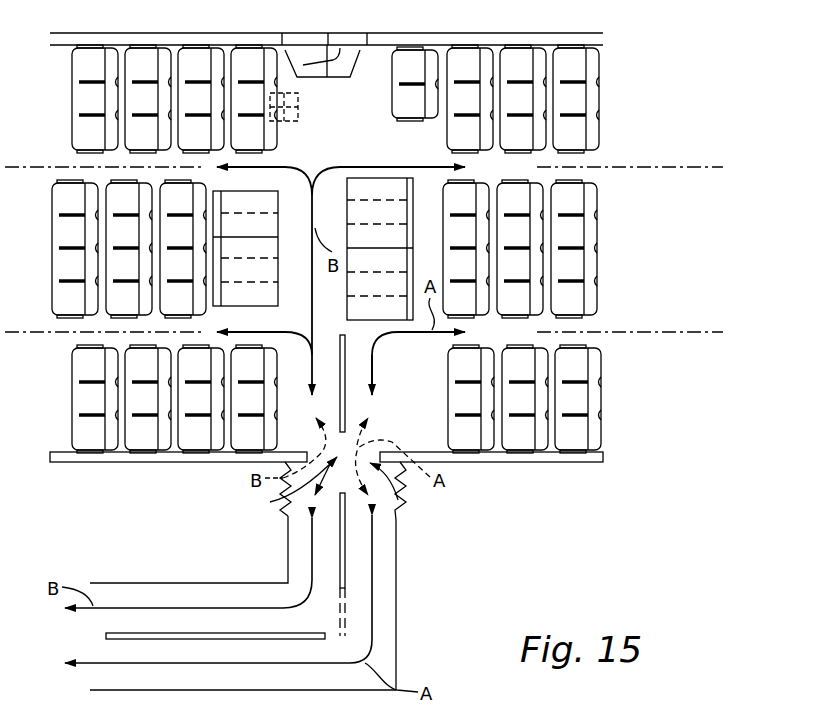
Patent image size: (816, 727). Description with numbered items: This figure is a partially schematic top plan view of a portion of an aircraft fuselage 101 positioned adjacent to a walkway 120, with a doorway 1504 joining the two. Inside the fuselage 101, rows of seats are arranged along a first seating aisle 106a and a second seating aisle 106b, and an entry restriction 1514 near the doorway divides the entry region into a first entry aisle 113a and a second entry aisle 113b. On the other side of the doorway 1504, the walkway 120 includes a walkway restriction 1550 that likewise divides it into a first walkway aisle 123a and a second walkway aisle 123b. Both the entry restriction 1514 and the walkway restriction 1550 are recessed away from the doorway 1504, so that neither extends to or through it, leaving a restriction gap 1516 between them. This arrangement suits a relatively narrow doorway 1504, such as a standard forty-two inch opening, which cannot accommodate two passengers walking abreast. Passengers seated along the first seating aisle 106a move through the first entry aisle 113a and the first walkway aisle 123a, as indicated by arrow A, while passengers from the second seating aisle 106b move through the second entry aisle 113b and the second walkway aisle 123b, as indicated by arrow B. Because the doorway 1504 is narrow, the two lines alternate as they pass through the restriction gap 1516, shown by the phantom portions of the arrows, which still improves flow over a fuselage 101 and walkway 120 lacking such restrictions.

The fuselage 101 is at (470, 33).
The first seating aisle 106a is at (600, 340).
The second seating aisle 106b is at (600, 175).
The entry restriction 1514 is at (345, 368).
The first entry aisle 113a is at (408, 422).
The second entry aisle 113b is at (298, 423).
The restriction gap 1516 is at (283, 497).
The doorway 1504 is at (402, 497).
The first walkway aisle 123a is at (385, 603).
The second walkway aisle 123b is at (133, 595).
The walkway restriction 1550 is at (333, 544).
The walkway 120 is at (397, 663).